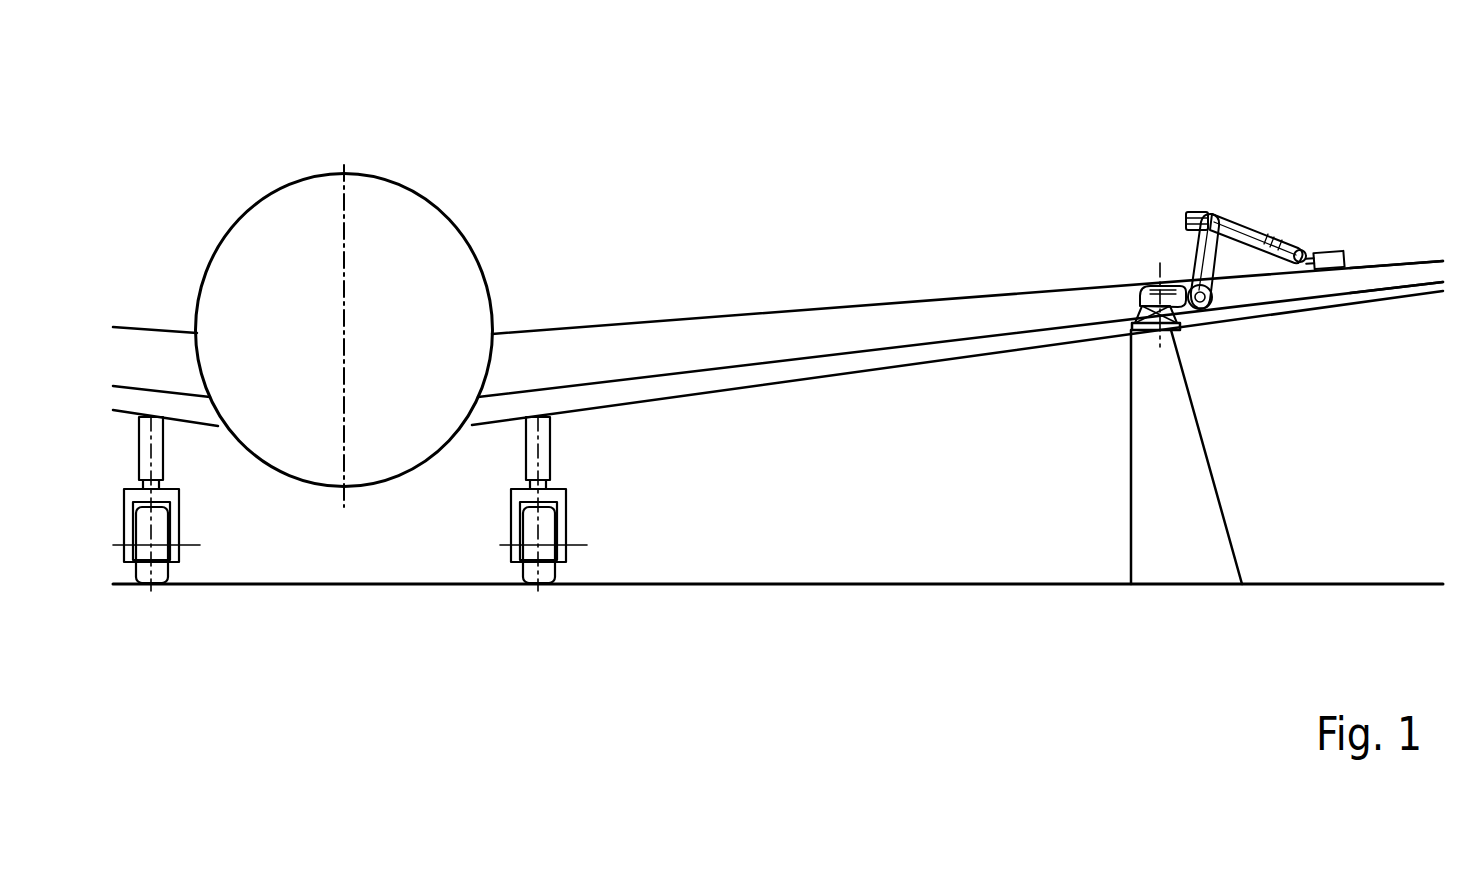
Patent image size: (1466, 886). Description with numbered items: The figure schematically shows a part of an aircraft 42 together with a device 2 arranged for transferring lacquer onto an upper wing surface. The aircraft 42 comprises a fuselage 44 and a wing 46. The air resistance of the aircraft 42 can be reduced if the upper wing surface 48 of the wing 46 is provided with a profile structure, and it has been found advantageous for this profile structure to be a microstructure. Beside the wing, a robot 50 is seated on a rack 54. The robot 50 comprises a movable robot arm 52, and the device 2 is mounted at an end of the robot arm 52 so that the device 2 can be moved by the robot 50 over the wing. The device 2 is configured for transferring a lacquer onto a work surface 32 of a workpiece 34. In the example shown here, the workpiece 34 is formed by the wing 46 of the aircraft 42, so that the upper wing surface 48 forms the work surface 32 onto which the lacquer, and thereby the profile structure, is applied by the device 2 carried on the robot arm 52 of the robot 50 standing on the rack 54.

The aircraft 42 is at (433, 148).
The fuselage 44 is at (432, 229).
The wing 46 is at (808, 298).
The workpiece 34 is at (888, 287).
The work surface 32 is at (957, 297).
The upper wing surface 48 is at (1417, 258).
The robot 50 is at (1168, 243).
The robot arm 52 is at (1250, 230).
The device 2 is at (1337, 247).
The rack 54 is at (1145, 445).